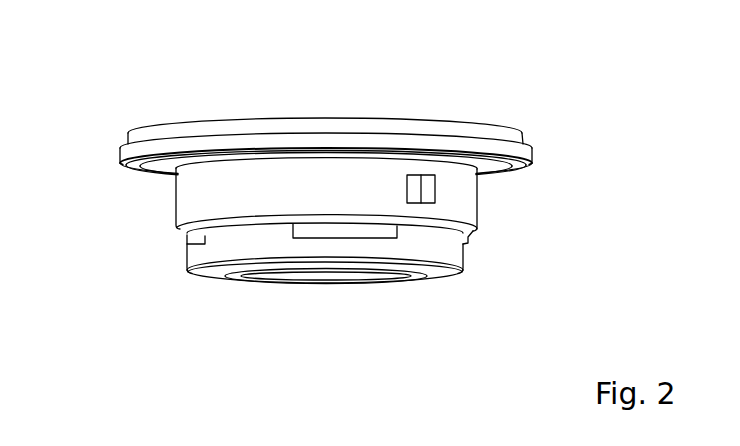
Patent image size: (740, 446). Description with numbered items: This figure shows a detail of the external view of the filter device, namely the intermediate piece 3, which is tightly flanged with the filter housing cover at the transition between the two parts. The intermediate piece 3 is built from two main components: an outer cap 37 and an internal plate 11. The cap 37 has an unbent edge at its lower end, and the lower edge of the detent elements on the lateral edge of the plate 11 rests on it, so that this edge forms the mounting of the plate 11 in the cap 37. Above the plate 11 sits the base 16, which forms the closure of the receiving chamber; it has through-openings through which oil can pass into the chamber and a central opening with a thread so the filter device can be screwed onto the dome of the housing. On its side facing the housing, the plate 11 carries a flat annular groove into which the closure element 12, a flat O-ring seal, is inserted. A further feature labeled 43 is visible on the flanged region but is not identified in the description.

The intermediate piece 3 is at (168, 202).
The base 16 is at (323, 118).
The sealing bead ring 43 is at (508, 170).
The cap 37 is at (467, 197).
The plate 11 is at (202, 253).
The closure element 12 is at (218, 274).